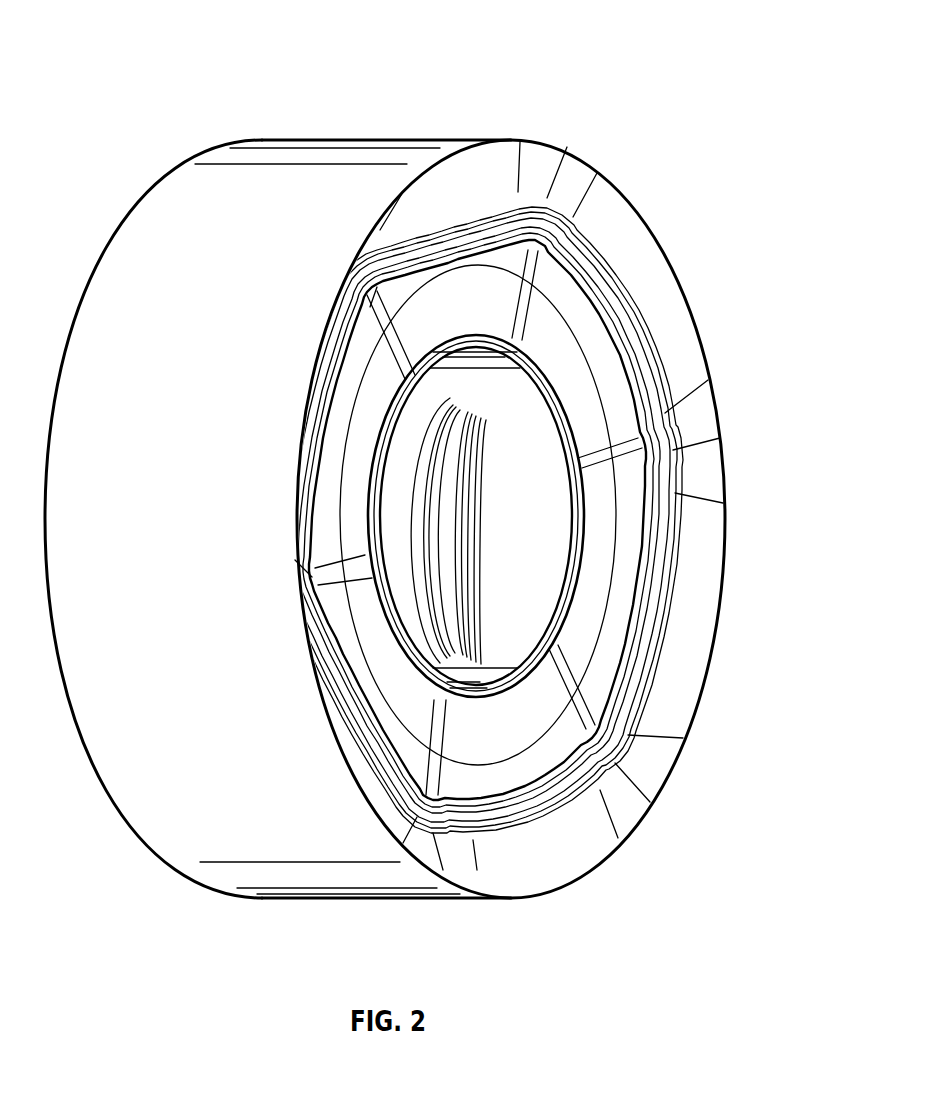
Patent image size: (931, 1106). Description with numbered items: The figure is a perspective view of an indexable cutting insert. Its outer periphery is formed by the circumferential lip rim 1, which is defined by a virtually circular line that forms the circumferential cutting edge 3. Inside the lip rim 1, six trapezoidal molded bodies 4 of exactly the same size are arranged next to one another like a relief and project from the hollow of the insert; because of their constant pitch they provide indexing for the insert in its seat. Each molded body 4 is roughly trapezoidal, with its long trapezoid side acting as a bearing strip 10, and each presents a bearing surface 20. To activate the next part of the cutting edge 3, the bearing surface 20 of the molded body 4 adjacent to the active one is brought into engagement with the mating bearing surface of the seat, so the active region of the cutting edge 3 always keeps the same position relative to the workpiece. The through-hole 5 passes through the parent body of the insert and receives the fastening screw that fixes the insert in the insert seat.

The lip rim 1 is at (493, 158).
The cutting edge 3 is at (567, 165).
The molded bodies 4 is at (482, 314).
The through-hole 5 is at (497, 432).
The bearing strip 10 is at (590, 302).
The bearing surface 20 is at (617, 320).